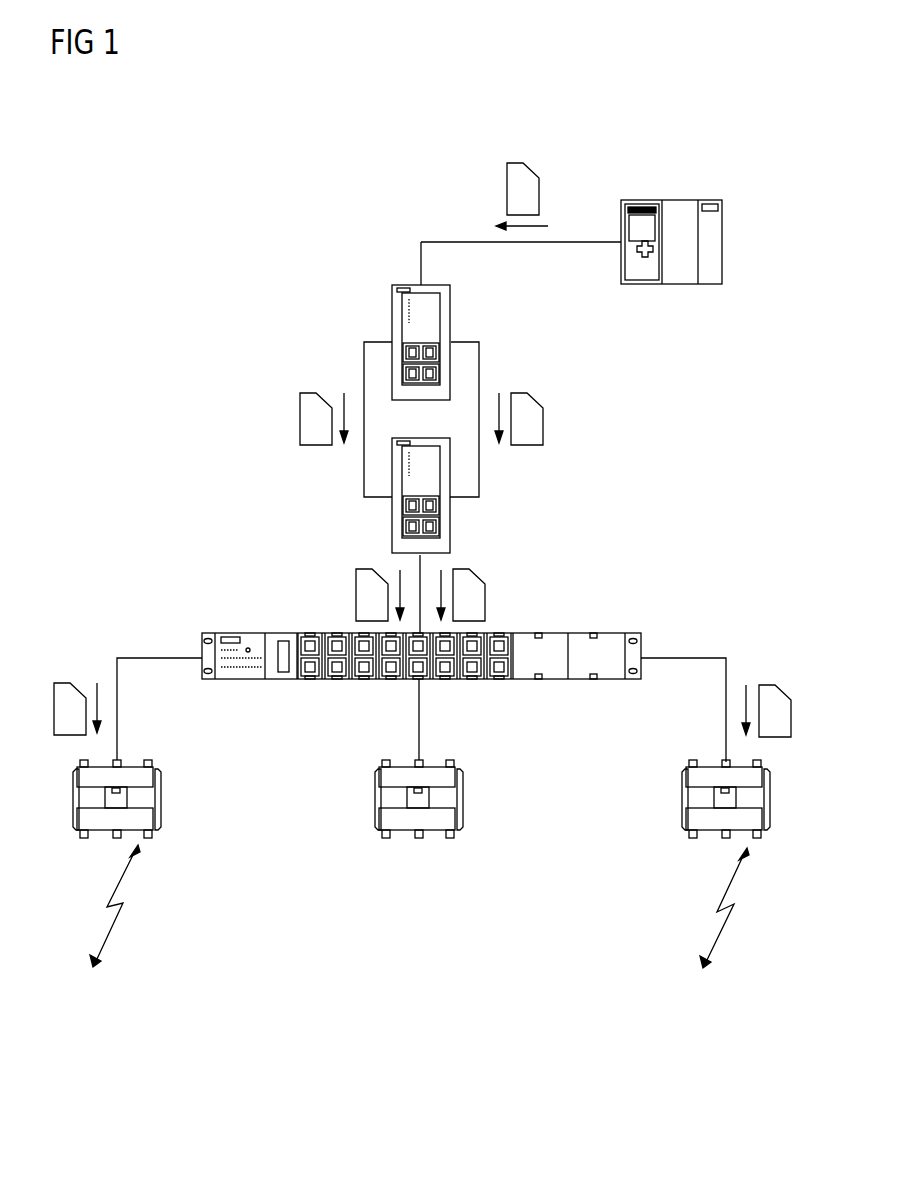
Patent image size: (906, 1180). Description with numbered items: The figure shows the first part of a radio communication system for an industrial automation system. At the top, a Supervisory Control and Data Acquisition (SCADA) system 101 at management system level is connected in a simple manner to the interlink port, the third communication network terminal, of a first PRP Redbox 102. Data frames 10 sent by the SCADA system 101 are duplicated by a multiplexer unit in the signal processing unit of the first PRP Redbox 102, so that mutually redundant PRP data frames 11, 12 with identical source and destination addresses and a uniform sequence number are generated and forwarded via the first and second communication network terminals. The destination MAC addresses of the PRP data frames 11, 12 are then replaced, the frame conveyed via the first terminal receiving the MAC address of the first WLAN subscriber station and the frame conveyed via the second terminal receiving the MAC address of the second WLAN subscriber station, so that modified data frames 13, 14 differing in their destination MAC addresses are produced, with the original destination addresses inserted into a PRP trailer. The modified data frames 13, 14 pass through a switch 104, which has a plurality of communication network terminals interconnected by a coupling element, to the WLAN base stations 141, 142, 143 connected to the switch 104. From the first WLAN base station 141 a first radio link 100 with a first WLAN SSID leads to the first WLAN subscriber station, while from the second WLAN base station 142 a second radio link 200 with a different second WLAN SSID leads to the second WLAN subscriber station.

The data frames 10 is at (513, 160).
The Supervisory Control and Data Acquisition (SCADA) system 101 is at (672, 198).
The first PRP Redbox 102 is at (392, 300).
The PRP data frame 11 is at (300, 420).
The PRP data frame 12 is at (543, 420).
The modified data frame 13 is at (356, 594).
The modified data frame 14 is at (485, 594).
The switch 104 is at (608, 680).
The first WLAN base station 141 is at (161, 800).
The second WLAN base station 142 is at (682, 800).
The WLAN base station 143 is at (464, 800).
The first radio link 100 is at (117, 925).
The second radio link 200 is at (727, 927).